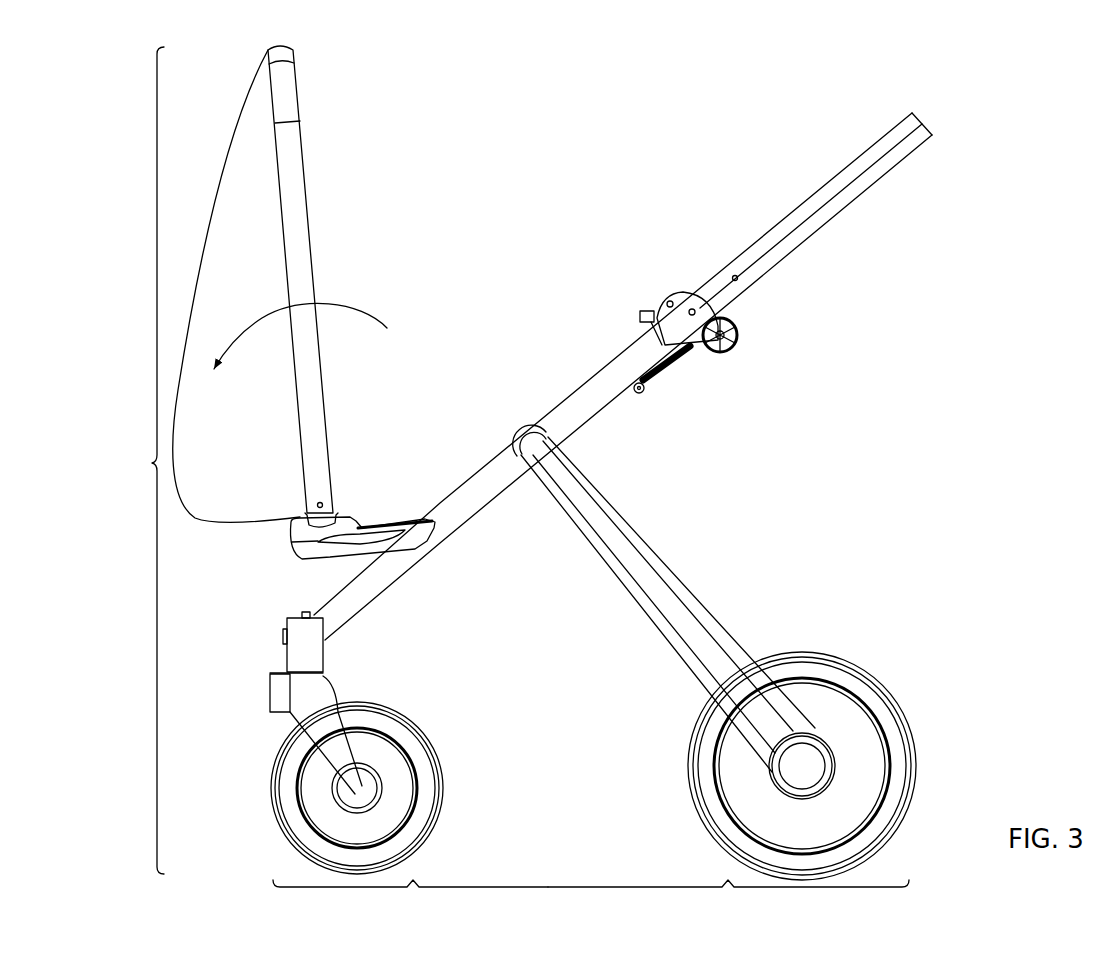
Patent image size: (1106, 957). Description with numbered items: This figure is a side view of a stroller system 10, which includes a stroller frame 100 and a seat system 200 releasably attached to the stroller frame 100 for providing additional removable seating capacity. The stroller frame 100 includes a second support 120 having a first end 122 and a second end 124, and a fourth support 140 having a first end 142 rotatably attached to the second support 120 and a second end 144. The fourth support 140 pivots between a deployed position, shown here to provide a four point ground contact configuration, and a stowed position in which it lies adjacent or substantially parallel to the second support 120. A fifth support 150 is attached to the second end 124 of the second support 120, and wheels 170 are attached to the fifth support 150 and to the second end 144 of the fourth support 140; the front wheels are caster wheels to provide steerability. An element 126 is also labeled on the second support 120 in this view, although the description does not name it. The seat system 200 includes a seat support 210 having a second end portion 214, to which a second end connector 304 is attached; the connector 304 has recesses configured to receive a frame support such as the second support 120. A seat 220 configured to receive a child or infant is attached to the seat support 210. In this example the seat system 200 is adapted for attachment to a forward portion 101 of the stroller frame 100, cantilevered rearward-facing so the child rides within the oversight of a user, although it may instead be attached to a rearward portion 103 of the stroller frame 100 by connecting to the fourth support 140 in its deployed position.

The stroller system 10 is at (144, 460).
The stroller frame 100 is at (864, 92).
The forward portion 101 is at (410, 898).
The rearward portion 103 is at (728, 898).
The second support 120 is at (601, 369).
The first end of second support 122 is at (852, 140).
The second end of second support 124 is at (311, 596).
The locking assembly 126 is at (693, 346).
The fourth support 140 is at (665, 565).
The first end of fourth support 142 is at (580, 449).
The second end of fourth support 144 is at (821, 718).
The fifth support 150 is at (283, 651).
The wheels 170 is at (900, 700).
The seat system 200 is at (368, 100).
The seat support 210 is at (306, 222).
The second end portion of seat support 214 is at (339, 477).
The seat 220 is at (232, 160).
The second end connector 304 is at (365, 552).